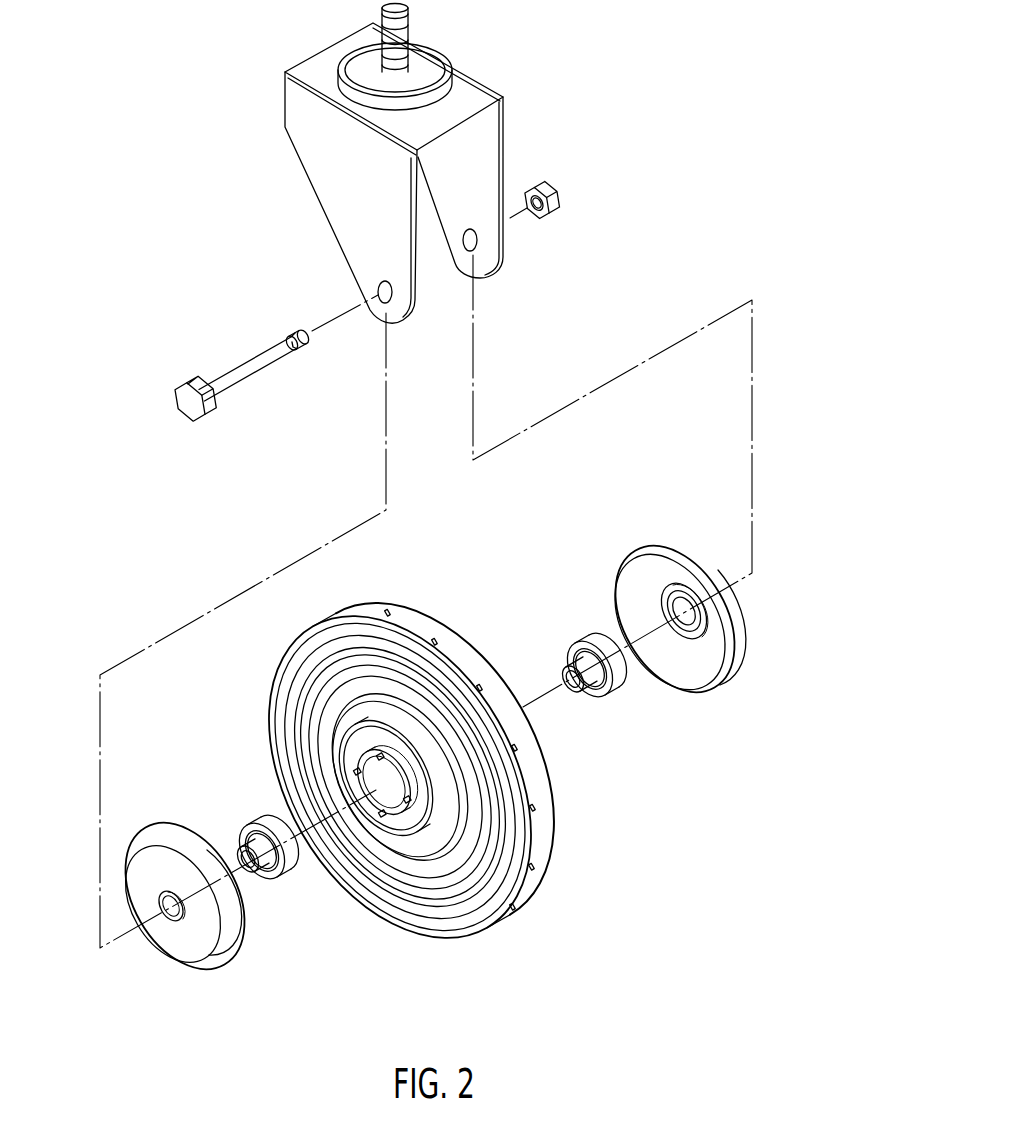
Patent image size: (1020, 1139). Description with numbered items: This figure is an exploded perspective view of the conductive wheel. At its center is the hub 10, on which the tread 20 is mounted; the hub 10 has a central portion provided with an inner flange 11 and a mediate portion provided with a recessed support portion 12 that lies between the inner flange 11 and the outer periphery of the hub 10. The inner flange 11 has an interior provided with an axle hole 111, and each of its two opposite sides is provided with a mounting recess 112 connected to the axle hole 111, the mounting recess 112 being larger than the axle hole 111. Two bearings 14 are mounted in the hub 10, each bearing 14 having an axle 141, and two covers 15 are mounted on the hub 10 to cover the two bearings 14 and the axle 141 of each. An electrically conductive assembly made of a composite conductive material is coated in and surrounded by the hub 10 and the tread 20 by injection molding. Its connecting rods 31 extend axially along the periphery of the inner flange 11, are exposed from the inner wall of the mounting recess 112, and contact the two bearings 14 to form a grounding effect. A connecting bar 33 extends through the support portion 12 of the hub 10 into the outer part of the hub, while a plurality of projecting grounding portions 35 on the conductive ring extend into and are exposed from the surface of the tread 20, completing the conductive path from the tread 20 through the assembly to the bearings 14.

The tread 20 is at (432, 785).
The hub 10 is at (410, 893).
The inner flange 11 is at (356, 747).
The axle hole 111 is at (383, 795).
The mounting recess 112 is at (358, 782).
The support portion 12 is at (453, 851).
The bearing 14 is at (592, 640).
The axle 141 is at (578, 658).
The cover 15 is at (727, 617).
The connecting rod 31 is at (350, 770).
The connecting bar 33 is at (406, 852).
The grounding portion 35 is at (535, 808).